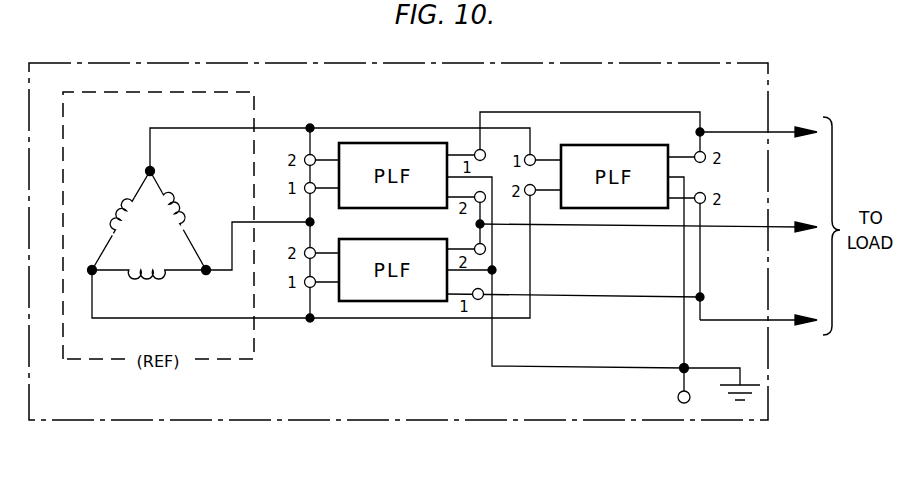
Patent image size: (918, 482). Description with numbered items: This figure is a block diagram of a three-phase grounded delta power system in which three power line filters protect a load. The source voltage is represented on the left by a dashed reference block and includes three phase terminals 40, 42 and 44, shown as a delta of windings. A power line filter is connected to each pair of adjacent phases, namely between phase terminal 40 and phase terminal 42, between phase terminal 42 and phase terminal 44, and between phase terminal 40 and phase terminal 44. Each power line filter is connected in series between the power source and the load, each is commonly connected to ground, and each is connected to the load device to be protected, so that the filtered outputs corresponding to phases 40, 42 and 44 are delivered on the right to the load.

The phase terminal 40 is at (154, 168).
The phase terminal 42 is at (206, 274).
The phase terminal 44 is at (96, 267).